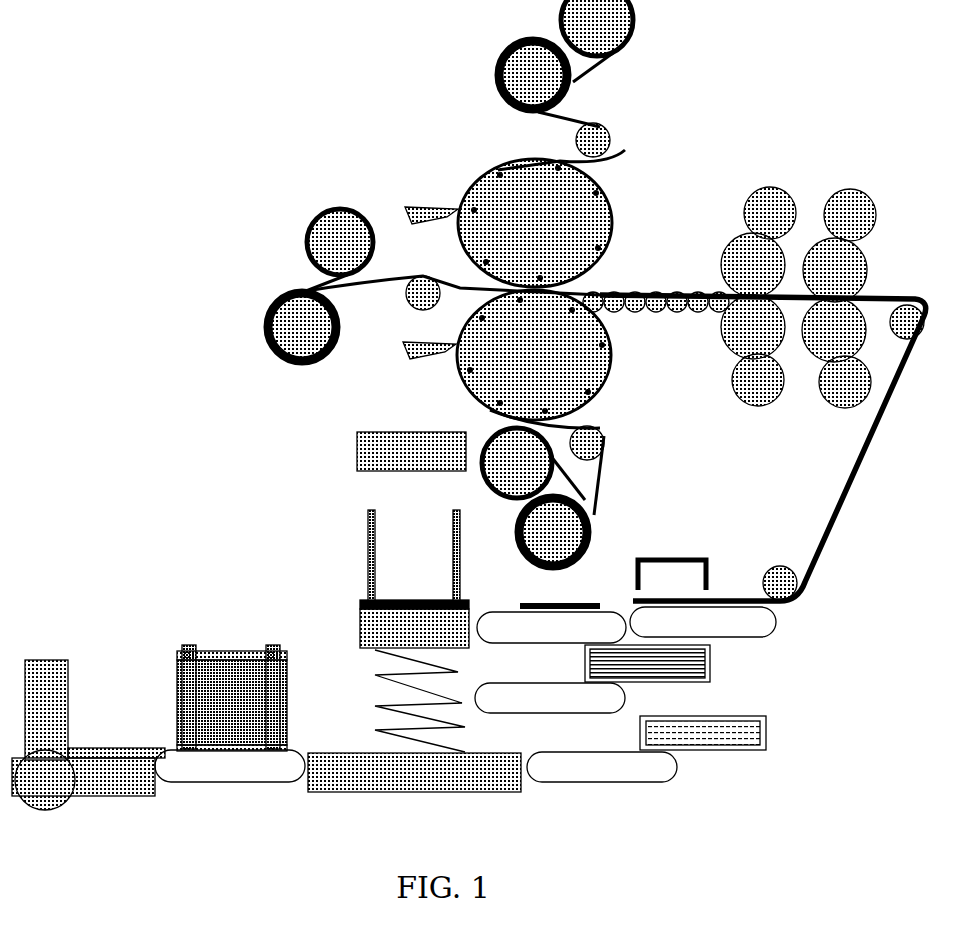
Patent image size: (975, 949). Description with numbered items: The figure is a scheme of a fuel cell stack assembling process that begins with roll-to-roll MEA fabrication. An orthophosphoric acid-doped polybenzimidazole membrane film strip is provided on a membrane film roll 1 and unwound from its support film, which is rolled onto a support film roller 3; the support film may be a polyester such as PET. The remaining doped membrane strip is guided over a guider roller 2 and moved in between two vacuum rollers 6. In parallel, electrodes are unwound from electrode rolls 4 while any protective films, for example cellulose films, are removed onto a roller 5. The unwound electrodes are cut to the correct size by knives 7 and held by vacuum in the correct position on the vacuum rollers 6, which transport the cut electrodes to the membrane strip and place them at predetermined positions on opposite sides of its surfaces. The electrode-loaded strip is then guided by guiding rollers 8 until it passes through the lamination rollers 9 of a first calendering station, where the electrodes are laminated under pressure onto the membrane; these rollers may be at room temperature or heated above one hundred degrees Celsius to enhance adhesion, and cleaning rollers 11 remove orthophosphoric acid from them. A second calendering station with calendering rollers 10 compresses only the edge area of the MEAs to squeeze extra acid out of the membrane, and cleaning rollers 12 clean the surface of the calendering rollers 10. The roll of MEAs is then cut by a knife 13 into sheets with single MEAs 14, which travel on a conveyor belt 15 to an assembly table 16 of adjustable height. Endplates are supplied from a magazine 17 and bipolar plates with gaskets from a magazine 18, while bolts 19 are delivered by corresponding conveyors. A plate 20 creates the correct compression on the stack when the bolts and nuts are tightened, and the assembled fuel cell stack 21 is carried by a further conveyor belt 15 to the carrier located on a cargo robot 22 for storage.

The membrane film roll 1 is at (302, 327).
The guider roller 2 is at (665, 361).
The support film roller 3 is at (340, 242).
The electrode roll 4 is at (543, 303).
The roller 5 is at (557, 249).
The vacuum roller 6 is at (534, 289).
The knife 7 is at (417, 282).
The guiding roller 8 is at (656, 315).
The lamination roller 9 is at (753, 296).
The calendering roller 10 is at (834, 300).
The cleaning roller 11 is at (764, 296).
The cleaning roller 12 is at (847, 298).
The knife 13 is at (672, 576).
The single MEA 14 is at (560, 592).
The conveyor belt 15 is at (465, 694).
The assembly table 16 is at (414, 772).
The magazine 17 is at (703, 733).
The magazine 18 is at (647, 663).
The bolt 19 is at (413, 543).
The plate 20 is at (411, 451).
The fuel cell stack 21 is at (232, 690).
The cargo robot 22 is at (88, 735).